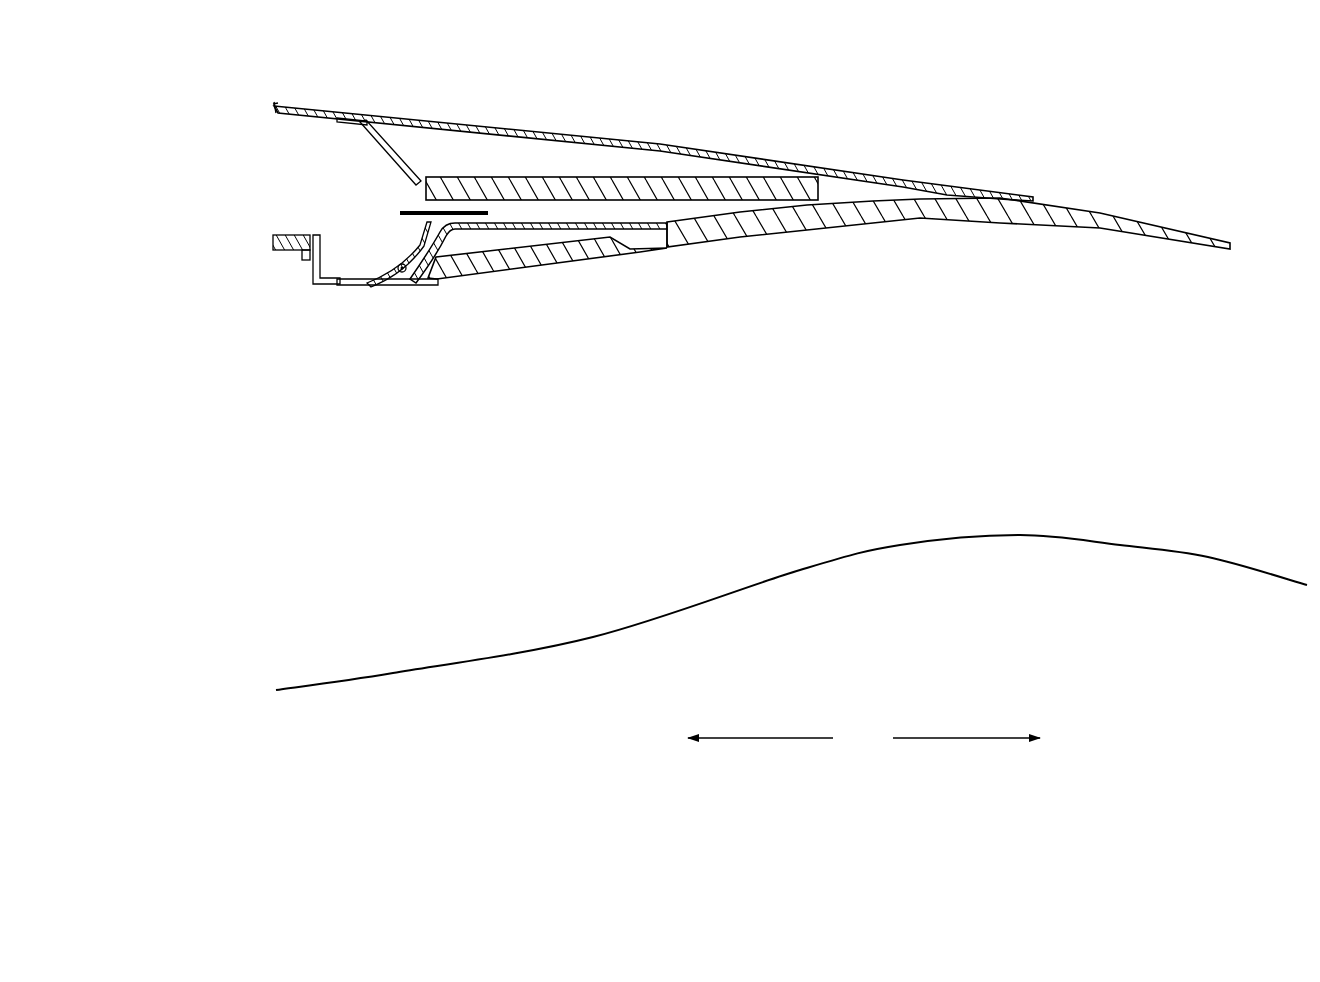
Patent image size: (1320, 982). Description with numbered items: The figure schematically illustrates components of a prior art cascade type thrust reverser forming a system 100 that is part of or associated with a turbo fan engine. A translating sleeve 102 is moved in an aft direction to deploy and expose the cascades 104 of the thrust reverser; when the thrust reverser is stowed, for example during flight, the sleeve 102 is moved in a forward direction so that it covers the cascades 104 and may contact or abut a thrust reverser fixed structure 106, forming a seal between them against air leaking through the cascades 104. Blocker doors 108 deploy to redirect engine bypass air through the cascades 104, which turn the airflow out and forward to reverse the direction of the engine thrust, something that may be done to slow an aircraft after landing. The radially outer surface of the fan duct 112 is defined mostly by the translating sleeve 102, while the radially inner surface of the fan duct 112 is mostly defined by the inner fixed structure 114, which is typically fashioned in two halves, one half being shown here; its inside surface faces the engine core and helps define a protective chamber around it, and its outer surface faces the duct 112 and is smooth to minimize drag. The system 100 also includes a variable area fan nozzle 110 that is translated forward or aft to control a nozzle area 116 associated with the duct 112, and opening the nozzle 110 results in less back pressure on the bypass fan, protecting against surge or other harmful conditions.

The system 100 is at (1186, 162).
The sleeve 102 is at (879, 166).
The cascades 104 is at (561, 177).
The thrust reverser fixed structure 106 is at (353, 273).
The blocker doors 108 is at (480, 277).
The variable area fan nozzle 110 is at (990, 219).
The fan duct 112 is at (685, 462).
The inner fixed structure 114 is at (807, 571).
The nozzle area 116 is at (1208, 256).